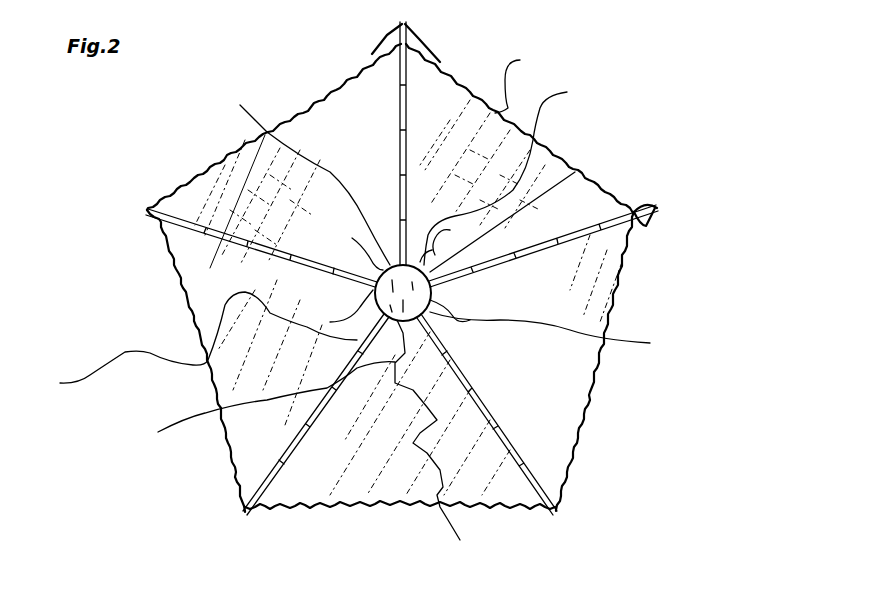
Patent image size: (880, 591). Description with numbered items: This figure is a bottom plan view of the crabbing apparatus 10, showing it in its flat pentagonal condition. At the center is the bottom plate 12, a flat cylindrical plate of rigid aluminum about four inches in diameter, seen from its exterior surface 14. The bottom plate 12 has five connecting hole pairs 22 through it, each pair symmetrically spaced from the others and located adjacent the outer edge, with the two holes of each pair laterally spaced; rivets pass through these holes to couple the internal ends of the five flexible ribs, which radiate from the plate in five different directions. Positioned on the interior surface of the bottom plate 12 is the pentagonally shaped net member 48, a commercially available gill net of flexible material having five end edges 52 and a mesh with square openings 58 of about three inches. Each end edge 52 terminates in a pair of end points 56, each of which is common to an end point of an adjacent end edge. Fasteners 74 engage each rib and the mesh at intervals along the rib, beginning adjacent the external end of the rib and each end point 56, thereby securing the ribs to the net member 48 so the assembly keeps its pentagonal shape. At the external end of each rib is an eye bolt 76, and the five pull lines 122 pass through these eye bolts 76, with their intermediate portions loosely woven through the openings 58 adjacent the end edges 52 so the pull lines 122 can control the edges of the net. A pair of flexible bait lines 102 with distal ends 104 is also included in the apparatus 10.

The crabbing apparatus 10 is at (660, 258).
The bottom plate 12 is at (193, 344).
The exterior surface 14 is at (575, 172).
The connecting hole pairs 22 is at (443, 227).
The net member 48 is at (522, 81).
The end edges 52 is at (217, 175).
The end points 56 is at (405, 30).
The square openings 58 is at (570, 385).
The fasteners 74 is at (620, 203).
The eye bolt 76 is at (403, 22).
The bait lines 102 is at (253, 403).
The distal ends 104 is at (501, 321).
The pull lines 122 is at (250, 510).